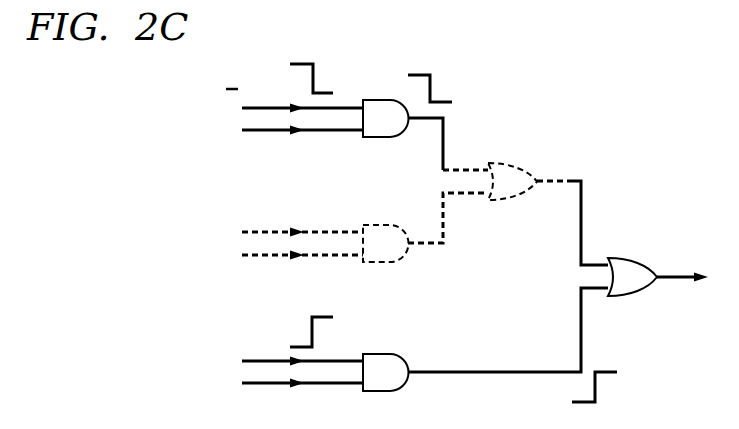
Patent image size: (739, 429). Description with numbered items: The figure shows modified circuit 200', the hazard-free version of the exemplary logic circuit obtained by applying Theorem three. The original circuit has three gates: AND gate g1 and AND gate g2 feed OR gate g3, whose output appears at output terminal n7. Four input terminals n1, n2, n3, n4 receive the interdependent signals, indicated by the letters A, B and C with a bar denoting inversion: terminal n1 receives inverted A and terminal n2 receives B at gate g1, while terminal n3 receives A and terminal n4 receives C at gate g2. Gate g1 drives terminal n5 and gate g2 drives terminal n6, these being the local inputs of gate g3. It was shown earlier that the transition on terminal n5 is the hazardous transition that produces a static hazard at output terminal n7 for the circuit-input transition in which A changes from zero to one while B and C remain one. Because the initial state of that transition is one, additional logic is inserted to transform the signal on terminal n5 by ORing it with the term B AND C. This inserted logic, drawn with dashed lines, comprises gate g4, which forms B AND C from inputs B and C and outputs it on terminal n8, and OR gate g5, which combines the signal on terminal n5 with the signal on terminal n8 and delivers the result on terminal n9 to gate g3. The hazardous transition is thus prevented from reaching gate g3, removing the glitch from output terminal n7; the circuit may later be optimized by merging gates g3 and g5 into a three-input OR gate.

The modified circuit 200' is at (399, 233).
The AND gate g1 is at (386, 118).
The AND gate g2 is at (386, 372).
The OR gate g3 is at (632, 277).
The logic gate g4 is at (325, 243).
The OR gate g5 is at (512, 181).
The input terminal n1 is at (302, 90).
The input terminal n2 is at (302, 141).
The input terminal n3 is at (302, 344).
The input terminal n4 is at (302, 396).
The terminal n5 is at (448, 141).
The input terminal n6 is at (508, 330).
The output terminal n7 is at (682, 290).
The terminal n8 is at (448, 218).
The terminal n9 is at (572, 220).